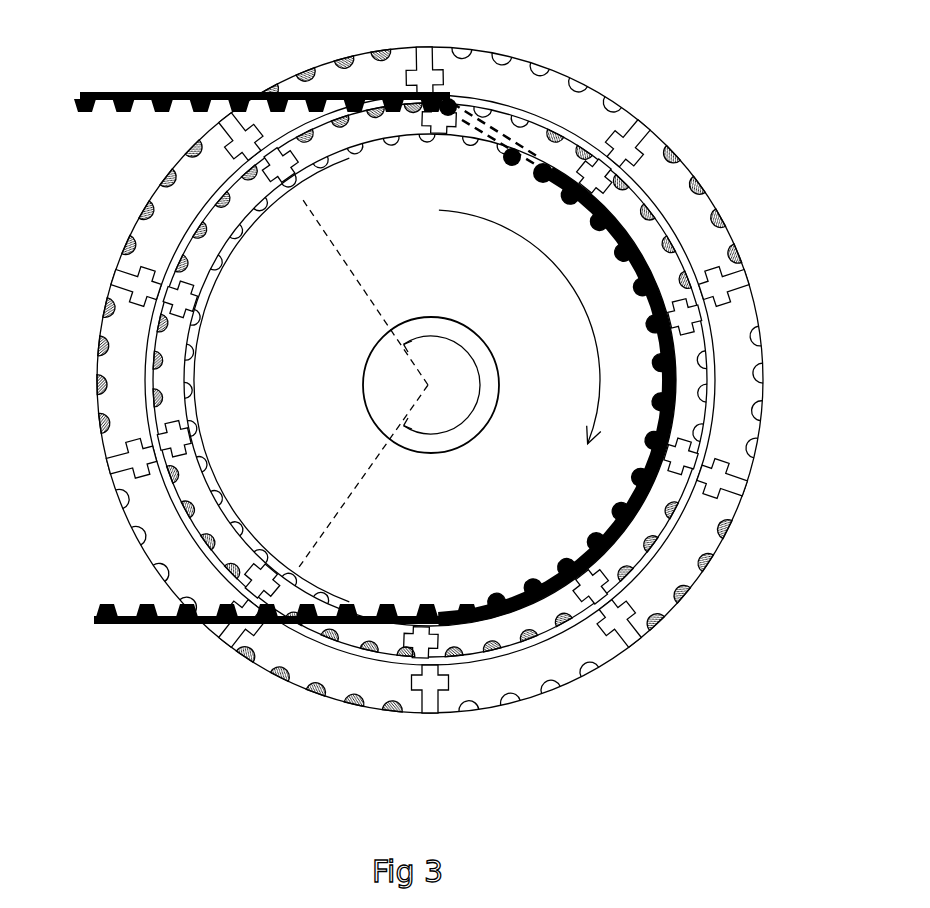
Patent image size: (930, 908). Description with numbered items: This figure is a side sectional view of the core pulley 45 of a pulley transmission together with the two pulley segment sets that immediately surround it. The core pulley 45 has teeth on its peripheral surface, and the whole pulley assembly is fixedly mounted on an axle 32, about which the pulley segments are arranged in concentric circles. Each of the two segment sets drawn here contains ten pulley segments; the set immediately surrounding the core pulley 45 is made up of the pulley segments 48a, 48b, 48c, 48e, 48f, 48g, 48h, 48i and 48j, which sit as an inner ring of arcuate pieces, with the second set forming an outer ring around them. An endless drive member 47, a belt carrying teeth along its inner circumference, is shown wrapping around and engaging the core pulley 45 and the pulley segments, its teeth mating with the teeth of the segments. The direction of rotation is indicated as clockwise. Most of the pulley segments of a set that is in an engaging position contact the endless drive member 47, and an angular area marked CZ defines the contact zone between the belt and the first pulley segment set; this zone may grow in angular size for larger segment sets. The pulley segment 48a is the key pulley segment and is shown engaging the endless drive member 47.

The endless drive member 47 is at (127, 90).
The core pulley 45 is at (605, 312).
The axle 32 is at (484, 418).
The pulley segment 48a is at (293, 153).
The pulley segment 48b is at (177, 278).
The pulley segment 48c is at (160, 373).
The pulley segment 48e is at (347, 637).
The pulley segment 48f is at (563, 607).
The pulley segment 48g is at (663, 495).
The pulley segment 48h is at (683, 357).
The pulley segment 48i is at (637, 200).
The pulley segment 48j is at (547, 123).